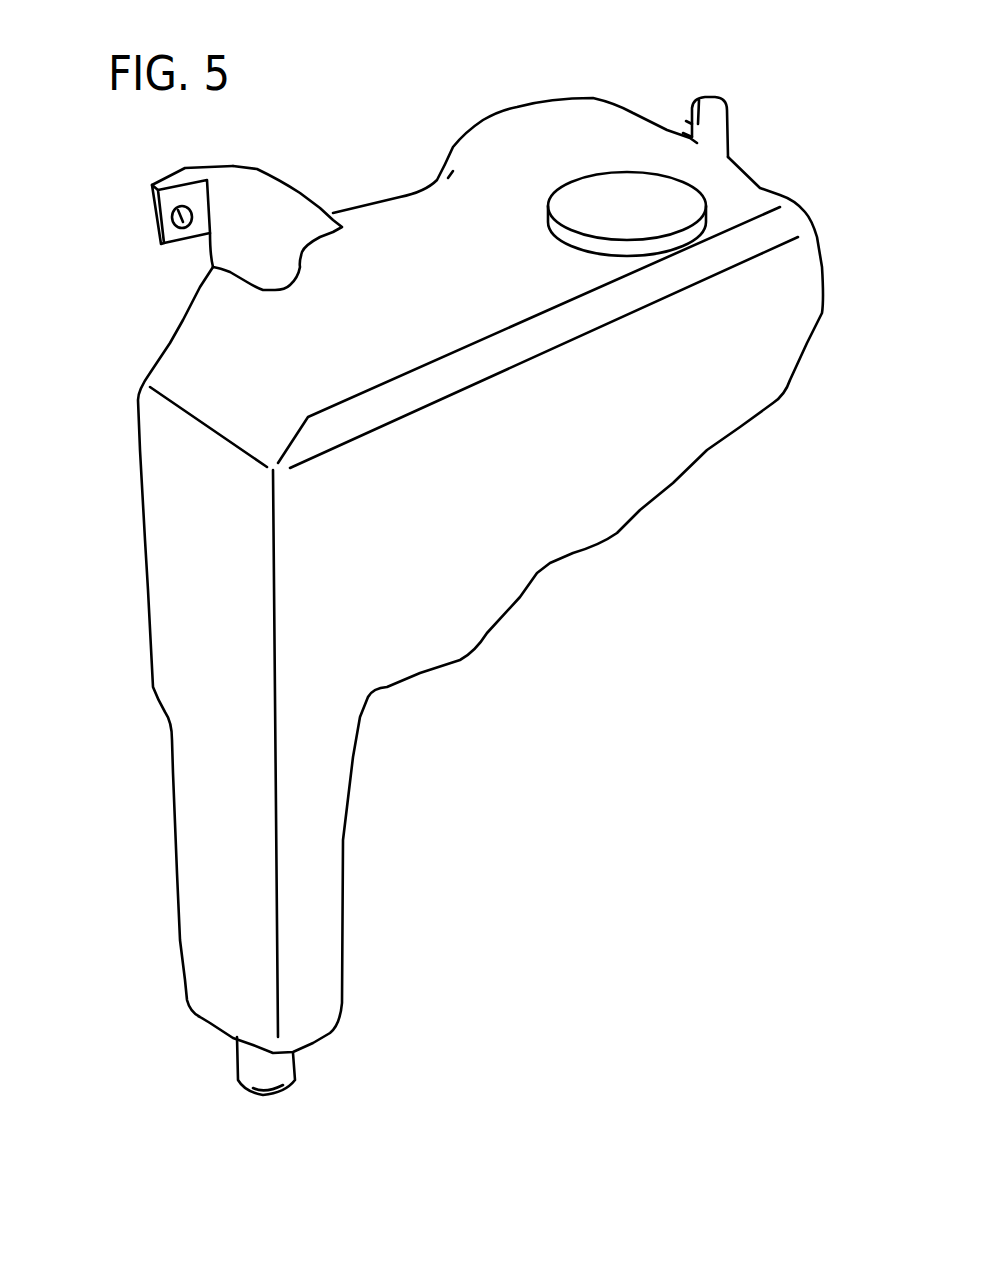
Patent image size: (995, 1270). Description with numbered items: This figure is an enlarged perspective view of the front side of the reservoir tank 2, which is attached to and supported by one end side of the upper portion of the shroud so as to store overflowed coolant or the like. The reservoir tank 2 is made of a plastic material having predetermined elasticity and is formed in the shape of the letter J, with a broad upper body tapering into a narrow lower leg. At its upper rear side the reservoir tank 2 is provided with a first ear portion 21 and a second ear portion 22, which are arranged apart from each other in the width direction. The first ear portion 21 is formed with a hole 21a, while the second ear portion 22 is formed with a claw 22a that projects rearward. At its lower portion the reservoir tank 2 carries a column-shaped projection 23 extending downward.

The reservoir tank 2 is at (170, 574).
The first ear portion 21 is at (185, 178).
The hole 21a is at (181, 228).
The second ear portion 22 is at (722, 133).
The claw 22a is at (687, 127).
The column-shaped projection 23 is at (255, 1072).